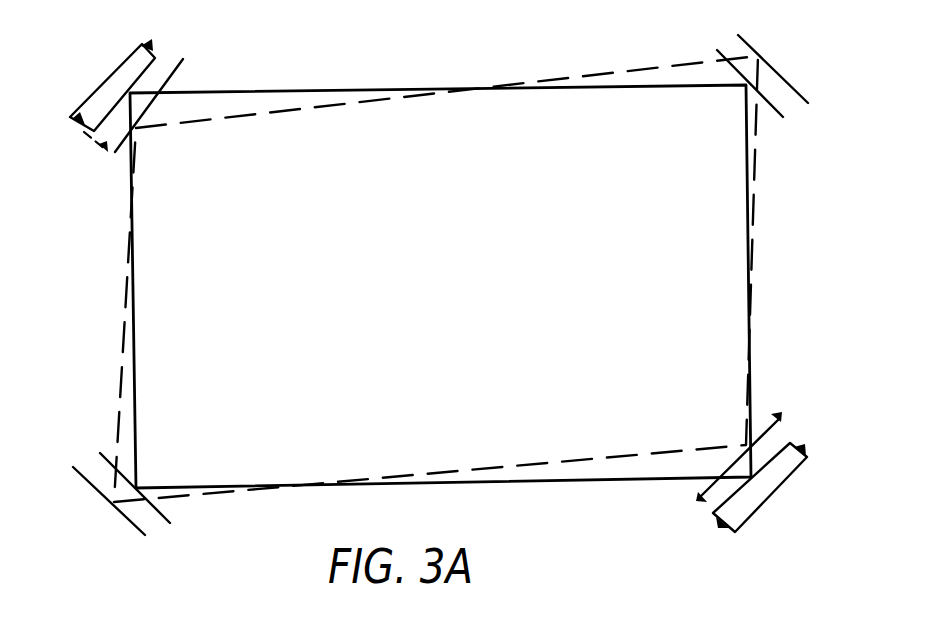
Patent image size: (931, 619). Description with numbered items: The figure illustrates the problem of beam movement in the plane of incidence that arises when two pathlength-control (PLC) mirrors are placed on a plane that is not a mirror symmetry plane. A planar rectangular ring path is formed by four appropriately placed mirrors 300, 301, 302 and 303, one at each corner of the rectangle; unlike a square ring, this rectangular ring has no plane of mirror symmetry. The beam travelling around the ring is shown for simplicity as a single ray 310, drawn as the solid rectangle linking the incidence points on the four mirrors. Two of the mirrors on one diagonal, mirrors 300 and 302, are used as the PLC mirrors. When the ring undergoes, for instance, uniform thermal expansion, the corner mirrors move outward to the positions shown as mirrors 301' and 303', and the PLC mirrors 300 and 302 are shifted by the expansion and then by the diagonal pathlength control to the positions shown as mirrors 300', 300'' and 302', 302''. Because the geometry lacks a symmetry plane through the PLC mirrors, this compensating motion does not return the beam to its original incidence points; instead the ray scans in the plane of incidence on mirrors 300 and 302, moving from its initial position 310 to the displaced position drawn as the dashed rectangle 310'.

The mirror 300 is at (174, 97).
The mirror in displaced position 300' is at (106, 85).
The mirror in further displaced position 300'' is at (89, 155).
The mirror 301 is at (711, 65).
The mirror in displaced position 301' is at (788, 60).
The mirror 302 is at (783, 454).
The mirror in displaced position 302' is at (800, 487).
The mirror in further displaced position 302'' is at (794, 392).
The mirror 303 is at (147, 511).
The mirror in displaced position 303' is at (87, 516).
The ray 310 is at (440, 271).
The ray in displaced position 310' is at (436, 279).